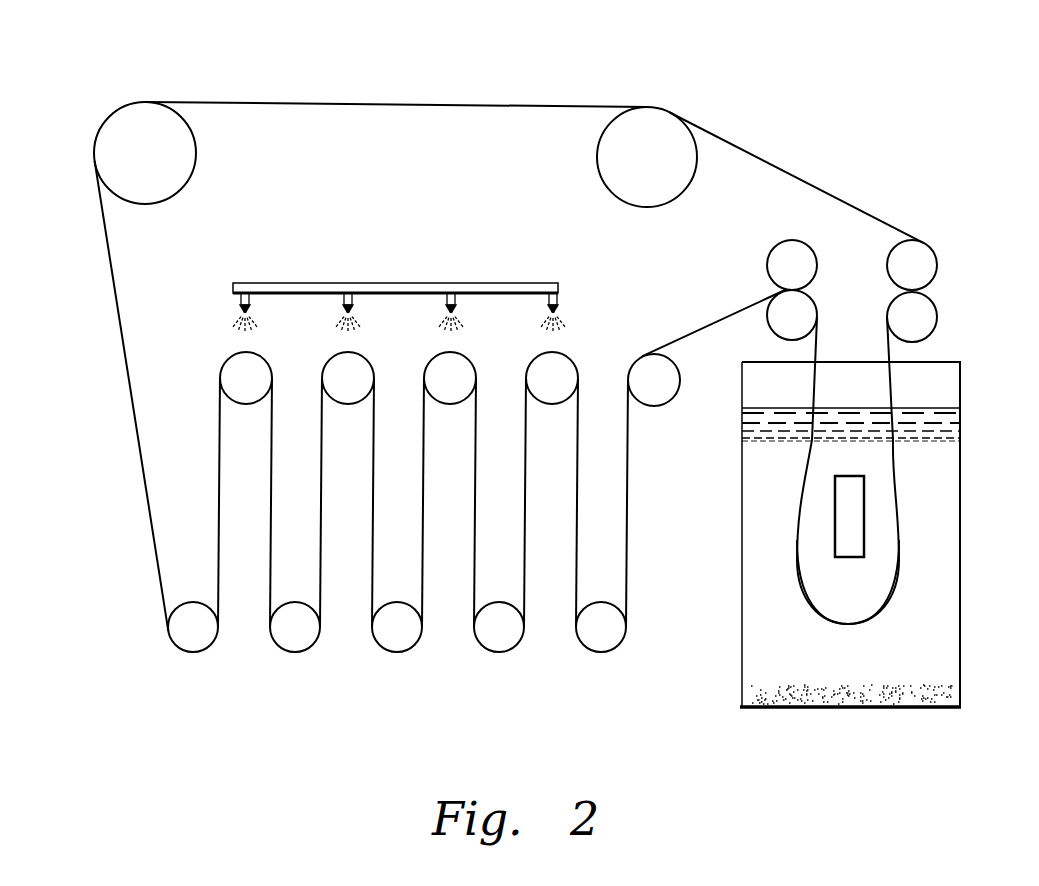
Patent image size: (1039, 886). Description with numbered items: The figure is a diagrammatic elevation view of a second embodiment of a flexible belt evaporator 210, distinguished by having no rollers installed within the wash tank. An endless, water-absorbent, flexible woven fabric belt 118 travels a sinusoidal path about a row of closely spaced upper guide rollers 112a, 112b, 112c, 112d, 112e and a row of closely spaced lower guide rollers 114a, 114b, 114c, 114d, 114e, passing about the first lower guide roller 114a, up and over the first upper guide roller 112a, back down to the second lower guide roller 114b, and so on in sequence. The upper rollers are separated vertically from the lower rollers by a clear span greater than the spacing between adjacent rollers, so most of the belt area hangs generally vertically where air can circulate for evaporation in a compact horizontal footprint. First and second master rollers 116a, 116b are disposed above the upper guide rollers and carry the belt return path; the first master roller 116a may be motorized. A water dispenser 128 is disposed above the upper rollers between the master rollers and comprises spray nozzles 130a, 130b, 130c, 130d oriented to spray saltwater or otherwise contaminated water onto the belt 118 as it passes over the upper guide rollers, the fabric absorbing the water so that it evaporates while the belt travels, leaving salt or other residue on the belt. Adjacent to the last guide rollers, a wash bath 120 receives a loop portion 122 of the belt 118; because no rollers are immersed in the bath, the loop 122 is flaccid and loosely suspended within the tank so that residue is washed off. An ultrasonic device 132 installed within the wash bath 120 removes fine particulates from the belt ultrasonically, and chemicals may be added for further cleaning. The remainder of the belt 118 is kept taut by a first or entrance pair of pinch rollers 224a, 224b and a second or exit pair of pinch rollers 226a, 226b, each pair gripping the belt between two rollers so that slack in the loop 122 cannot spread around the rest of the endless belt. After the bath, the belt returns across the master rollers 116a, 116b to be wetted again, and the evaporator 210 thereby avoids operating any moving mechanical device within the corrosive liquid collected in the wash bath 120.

The belt 118 is at (300, 102).
The first master roller 116a is at (112, 162).
The second master roller 116b is at (613, 166).
The upper guide roller 112a is at (222, 358).
The upper guide roller 112b is at (327, 357).
The upper guide roller 112c is at (429, 357).
The upper guide roller 112d is at (531, 357).
The upper guide roller 112e is at (670, 398).
The lower guide roller 114a is at (168, 640).
The lower guide roller 114b is at (290, 652).
The lower guide roller 114c is at (400, 652).
The lower guide roller 114d is at (498, 652).
The lower guide roller 114e is at (600, 652).
The water dispenser 128 is at (233, 285).
The spray nozzle 130a is at (252, 296).
The spray nozzle 130b is at (355, 298).
The spray nozzle 130c is at (458, 296).
The spray nozzle 130d is at (560, 300).
The entrance pinch roller 224a is at (770, 247).
The entrance pinch roller 224b is at (768, 325).
The exit pinch roller 226a is at (935, 248).
The exit pinch roller 226b is at (938, 308).
The wash bath 120 is at (867, 708).
The belt loop 122 is at (900, 560).
The ultrasonic device 132 is at (865, 508).
The flexible belt evaporator 210 is at (130, 720).